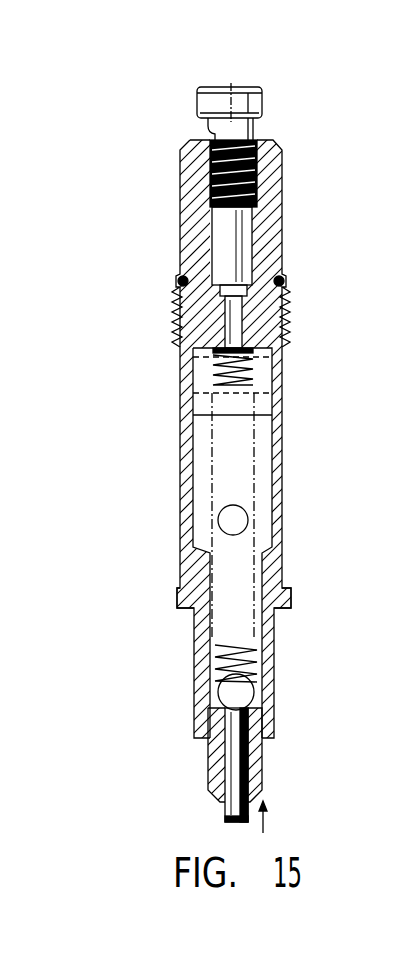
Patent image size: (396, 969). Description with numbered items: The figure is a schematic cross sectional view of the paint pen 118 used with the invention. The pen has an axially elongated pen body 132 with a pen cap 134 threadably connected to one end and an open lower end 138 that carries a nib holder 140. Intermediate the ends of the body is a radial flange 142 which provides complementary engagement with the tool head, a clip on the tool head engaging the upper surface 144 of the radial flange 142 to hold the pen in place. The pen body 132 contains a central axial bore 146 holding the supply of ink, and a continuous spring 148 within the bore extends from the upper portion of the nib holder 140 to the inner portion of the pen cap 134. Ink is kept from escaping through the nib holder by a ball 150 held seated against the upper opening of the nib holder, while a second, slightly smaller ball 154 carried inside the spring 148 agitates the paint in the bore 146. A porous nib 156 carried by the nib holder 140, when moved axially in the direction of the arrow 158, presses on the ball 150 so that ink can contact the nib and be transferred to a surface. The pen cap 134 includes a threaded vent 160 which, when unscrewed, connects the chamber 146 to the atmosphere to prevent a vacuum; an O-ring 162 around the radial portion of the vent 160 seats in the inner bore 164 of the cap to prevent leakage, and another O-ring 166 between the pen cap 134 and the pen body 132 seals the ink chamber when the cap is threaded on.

The paint pen 118 is at (301, 127).
The pen body 132 is at (183, 418).
The pen cap 134 is at (283, 237).
The open lower end 138 is at (275, 741).
The nib holder 140 is at (209, 778).
The radial flange 142 is at (178, 599).
The upper surface 144 is at (285, 587).
The central axial bore 146 is at (270, 367).
The continuous spring 148 is at (252, 664).
The ball 150 is at (221, 696).
The second ball 154 is at (242, 519).
The porous nib 156 is at (224, 812).
The arrow 158 is at (268, 815).
The vent 160 is at (197, 99).
The O-ring 162 is at (286, 298).
The inner bore 164 is at (212, 270).
The O-ring 166 is at (188, 281).